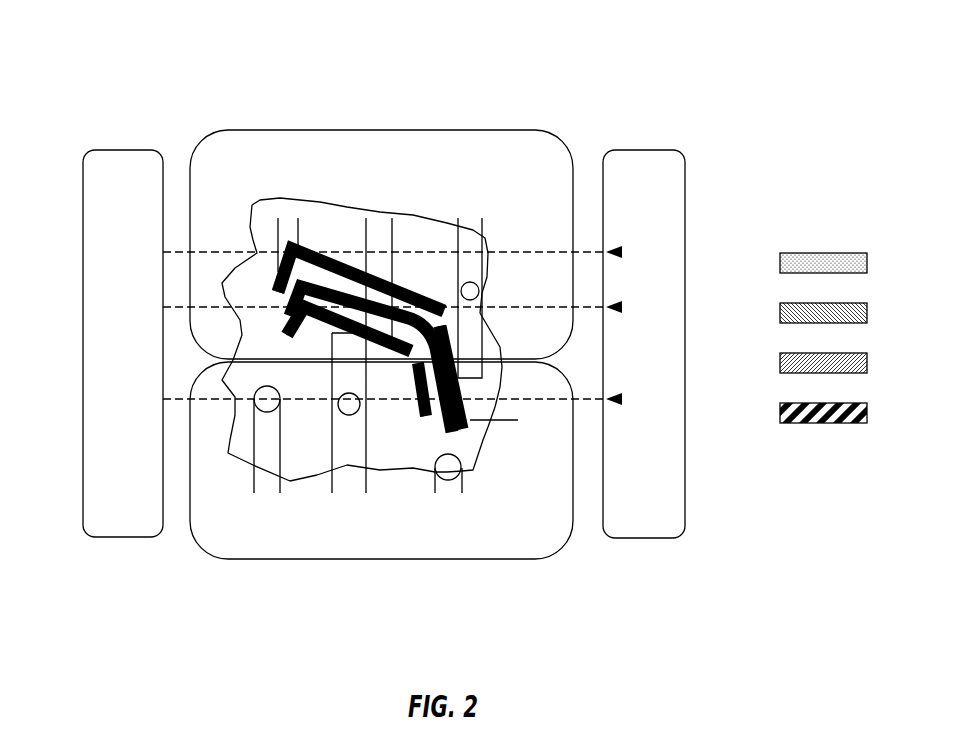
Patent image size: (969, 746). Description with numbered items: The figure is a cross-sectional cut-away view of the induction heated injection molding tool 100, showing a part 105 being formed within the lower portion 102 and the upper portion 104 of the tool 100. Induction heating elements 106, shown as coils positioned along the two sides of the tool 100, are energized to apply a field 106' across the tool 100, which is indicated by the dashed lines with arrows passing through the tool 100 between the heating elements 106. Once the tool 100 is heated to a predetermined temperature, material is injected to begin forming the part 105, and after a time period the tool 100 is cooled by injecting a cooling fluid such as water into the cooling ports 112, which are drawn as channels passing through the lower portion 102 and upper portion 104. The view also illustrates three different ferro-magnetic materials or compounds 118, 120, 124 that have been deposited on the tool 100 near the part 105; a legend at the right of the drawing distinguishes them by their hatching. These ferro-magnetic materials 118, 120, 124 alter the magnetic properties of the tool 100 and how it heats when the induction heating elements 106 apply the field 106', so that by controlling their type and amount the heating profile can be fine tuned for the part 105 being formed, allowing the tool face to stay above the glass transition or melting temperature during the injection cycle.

The tool 100 is at (108, 46).
The lower portion 102 is at (243, 560).
The upper portion 104 is at (248, 130).
The part 105 is at (314, 256).
The induction heating elements 106 is at (366, 330).
The field 106' is at (456, 300).
The cooling ports 112 is at (472, 255).
The ferro-magnetic material 118 is at (287, 322).
The ferro-magnetic material 120 is at (397, 287).
The ferro-magnetic material 124 is at (427, 420).